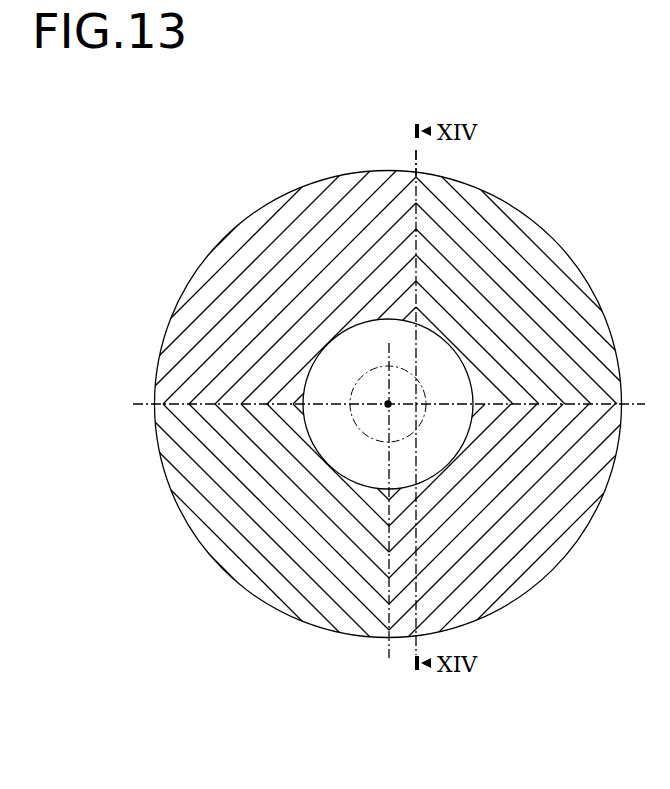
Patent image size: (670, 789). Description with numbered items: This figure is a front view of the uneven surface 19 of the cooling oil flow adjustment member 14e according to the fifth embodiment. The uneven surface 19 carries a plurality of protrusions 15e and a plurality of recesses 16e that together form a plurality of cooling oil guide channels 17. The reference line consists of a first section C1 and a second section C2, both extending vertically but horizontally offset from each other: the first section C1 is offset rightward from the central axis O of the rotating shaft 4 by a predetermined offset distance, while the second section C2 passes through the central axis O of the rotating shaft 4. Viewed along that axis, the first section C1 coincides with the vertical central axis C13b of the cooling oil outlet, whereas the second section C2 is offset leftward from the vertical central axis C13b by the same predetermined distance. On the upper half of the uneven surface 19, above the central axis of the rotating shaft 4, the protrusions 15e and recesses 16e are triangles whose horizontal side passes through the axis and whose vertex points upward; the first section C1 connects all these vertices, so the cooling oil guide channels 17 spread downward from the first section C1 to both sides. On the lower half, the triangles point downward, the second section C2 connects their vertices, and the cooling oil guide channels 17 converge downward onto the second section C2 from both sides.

The rotating shaft 4 is at (357, 432).
The cooling oil flow adjustment member 14e is at (541, 222).
The protrusions 15e is at (358, 298).
The recesses 16e is at (300, 322).
The cooling oil guide channels 17 is at (364, 569).
The uneven surface 19 is at (281, 125).
The vertical central axis of the cooling oil outlet C13b is at (416, 150).
The first section of the reference line C1 is at (418, 158).
The second section of the reference line C2 is at (388, 655).